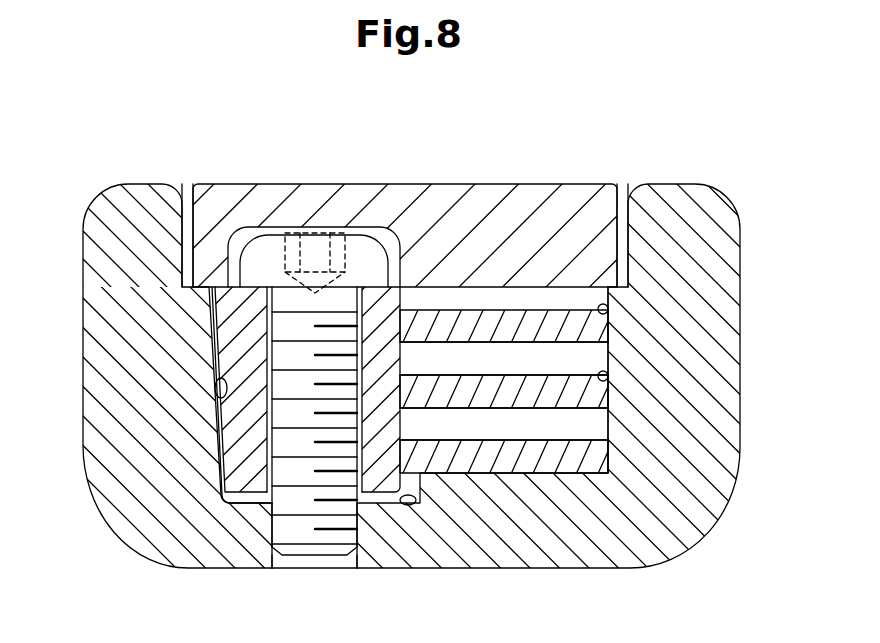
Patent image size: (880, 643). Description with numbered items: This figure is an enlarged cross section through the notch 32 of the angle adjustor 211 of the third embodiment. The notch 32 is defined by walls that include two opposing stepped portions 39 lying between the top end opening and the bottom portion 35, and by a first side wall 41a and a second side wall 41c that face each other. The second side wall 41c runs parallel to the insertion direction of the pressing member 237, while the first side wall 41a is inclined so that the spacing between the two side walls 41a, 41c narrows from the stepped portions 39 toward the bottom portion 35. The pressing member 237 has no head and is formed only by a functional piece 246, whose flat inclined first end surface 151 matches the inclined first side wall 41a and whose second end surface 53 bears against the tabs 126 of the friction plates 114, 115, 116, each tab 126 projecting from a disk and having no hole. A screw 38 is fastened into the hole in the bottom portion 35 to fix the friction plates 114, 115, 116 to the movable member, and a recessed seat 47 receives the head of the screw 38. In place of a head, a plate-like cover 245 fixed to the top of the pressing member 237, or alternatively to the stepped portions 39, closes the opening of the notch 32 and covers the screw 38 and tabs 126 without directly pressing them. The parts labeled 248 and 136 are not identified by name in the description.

The angle adjustor 211 is at (411, 321).
The cover 245 is at (405, 321).
The liner sleeve 248 is at (283, 295).
The screw 38 is at (355, 250).
The recessed seat 47 is at (384, 232).
The stepped portions 39 is at (200, 277).
The pressing member 237 is at (213, 363).
The functional piece 246 is at (233, 352).
The first side wall 41a is at (215, 398).
The second side wall 41c is at (607, 311).
The inclined first end surface 151 is at (215, 412).
The tab 126 is at (463, 440).
The friction plate 116 is at (535, 328).
The notch 32 is at (609, 386).
The second end surface 53 is at (402, 420).
The friction plate 114 is at (487, 457).
The friction plate 115 is at (553, 397).
The bolt 136 is at (273, 522).
The bottom portion 35 is at (411, 321).